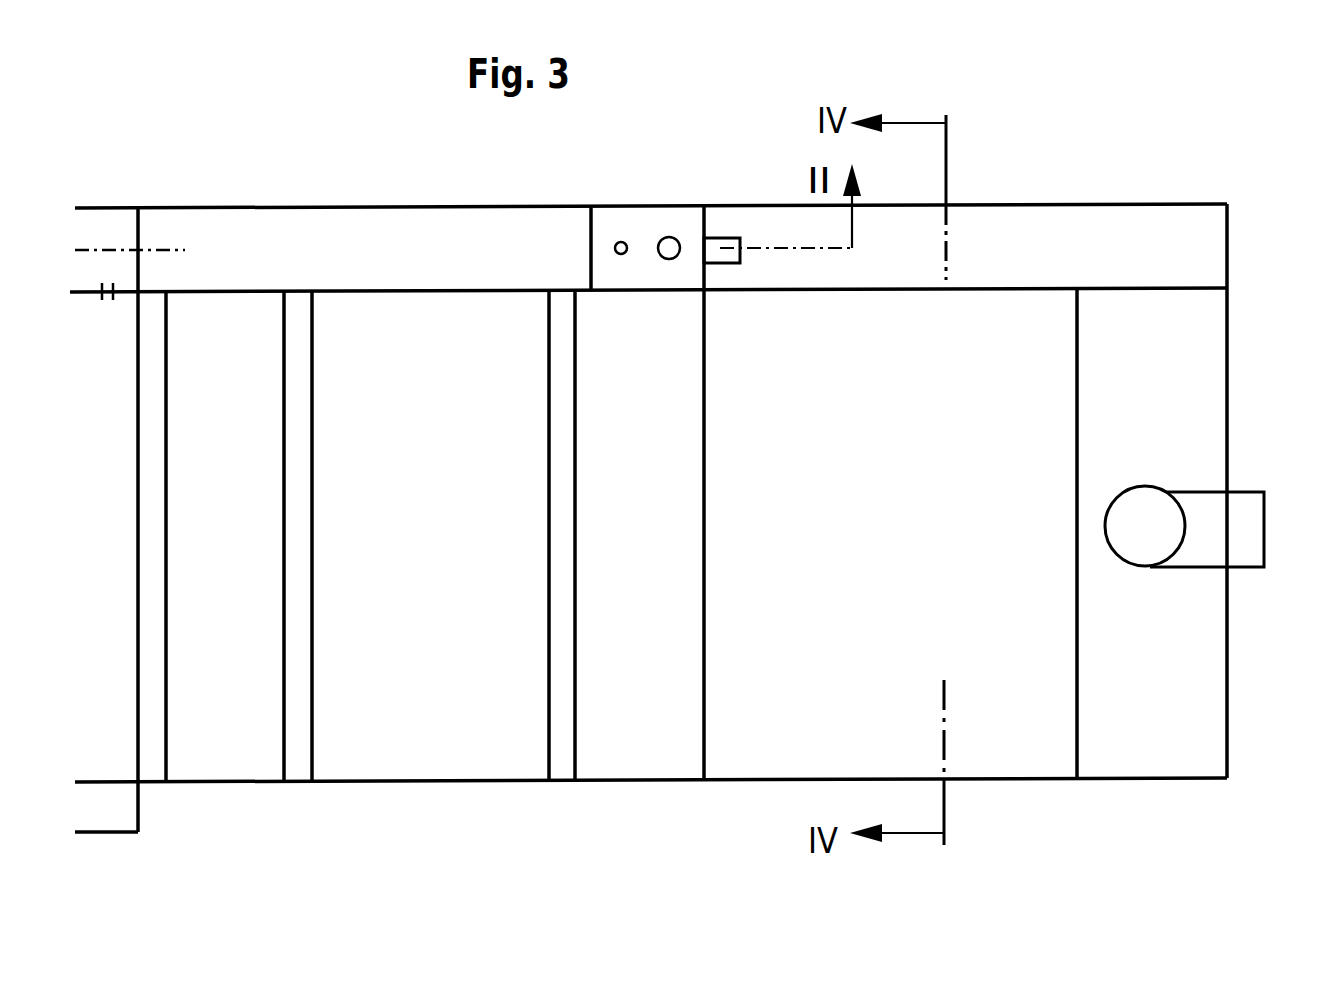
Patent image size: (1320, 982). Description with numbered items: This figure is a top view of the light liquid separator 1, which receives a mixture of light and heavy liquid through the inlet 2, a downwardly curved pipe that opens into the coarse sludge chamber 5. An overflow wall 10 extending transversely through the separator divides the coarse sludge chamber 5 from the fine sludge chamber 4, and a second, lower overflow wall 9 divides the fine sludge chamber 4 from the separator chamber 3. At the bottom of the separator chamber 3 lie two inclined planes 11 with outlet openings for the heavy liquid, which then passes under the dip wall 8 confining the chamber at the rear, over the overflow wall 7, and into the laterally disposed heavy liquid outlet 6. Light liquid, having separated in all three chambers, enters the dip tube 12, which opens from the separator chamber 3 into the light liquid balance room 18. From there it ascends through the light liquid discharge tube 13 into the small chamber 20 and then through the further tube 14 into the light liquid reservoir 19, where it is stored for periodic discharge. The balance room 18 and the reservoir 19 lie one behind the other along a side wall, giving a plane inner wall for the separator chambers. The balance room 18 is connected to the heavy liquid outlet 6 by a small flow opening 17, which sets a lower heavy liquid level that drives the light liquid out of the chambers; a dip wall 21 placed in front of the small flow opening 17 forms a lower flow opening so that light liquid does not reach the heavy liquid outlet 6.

The light liquid separator 1 is at (1228, 374).
The inlet 2 is at (1241, 512).
The separator chamber 3 is at (664, 614).
The fine sludge chamber 4 is at (876, 525).
The coarse sludge chamber 5 is at (1188, 666).
The heavy liquid outlet 6 is at (125, 800).
The overflow wall 7 is at (137, 535).
The dip wall 8 is at (166, 640).
The overflow wall 9 is at (704, 440).
The overflow wall 10 is at (1077, 410).
The inclined planes 11 is at (305, 692).
The dip tube 12 is at (668, 262).
The light liquid discharge tube 13 is at (614, 248).
The tube 14 is at (724, 264).
The small flow opening 17 is at (112, 301).
The light liquid balance room 18 is at (340, 256).
The light liquid reservoir 19 is at (1032, 248).
The small chamber 20 is at (643, 234).
The dip wall 21 is at (140, 275).